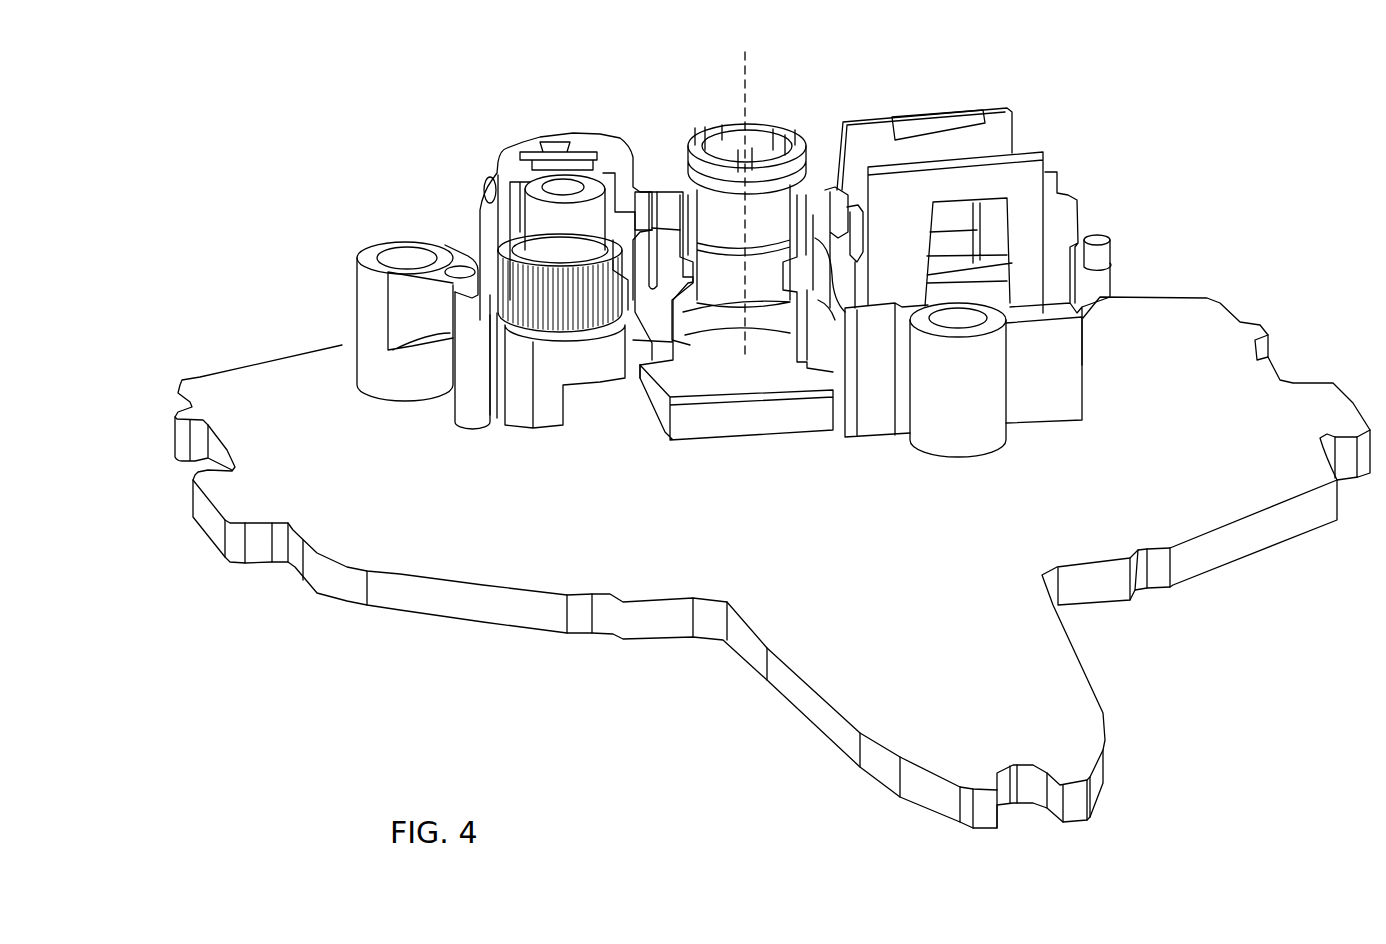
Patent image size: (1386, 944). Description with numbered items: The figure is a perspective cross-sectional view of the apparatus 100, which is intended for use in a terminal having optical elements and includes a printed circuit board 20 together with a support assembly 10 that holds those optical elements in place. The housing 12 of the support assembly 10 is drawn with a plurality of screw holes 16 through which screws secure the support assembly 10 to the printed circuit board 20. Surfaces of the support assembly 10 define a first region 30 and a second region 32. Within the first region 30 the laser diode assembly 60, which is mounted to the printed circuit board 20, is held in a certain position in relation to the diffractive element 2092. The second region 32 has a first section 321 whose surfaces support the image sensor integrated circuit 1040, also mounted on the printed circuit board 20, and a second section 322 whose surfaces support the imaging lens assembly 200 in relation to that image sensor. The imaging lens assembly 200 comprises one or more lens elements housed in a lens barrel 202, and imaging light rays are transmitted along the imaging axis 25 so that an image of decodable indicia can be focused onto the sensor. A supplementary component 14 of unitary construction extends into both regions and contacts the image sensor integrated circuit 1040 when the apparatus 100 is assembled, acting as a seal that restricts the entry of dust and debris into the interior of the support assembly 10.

The apparatus 100 is at (1095, 93).
The support assembly 10 is at (775, 292).
The housing 12 is at (490, 218).
The supplementary component 14 is at (515, 208).
The screw holes 16 is at (398, 256).
The printed circuit board 20 is at (951, 604).
The imaging axis 25 is at (748, 100).
The first region 30 is at (577, 403).
The second region 32 is at (736, 397).
The laser diode assembly 60 is at (526, 269).
The imaging lens assembly 200 is at (792, 186).
The lens barrel 202 is at (686, 146).
The first section 321 is at (648, 380).
The second section 322 is at (705, 276).
The image sensor integrated circuit 1040 is at (757, 417).
The diffractive element 2092 is at (555, 157).